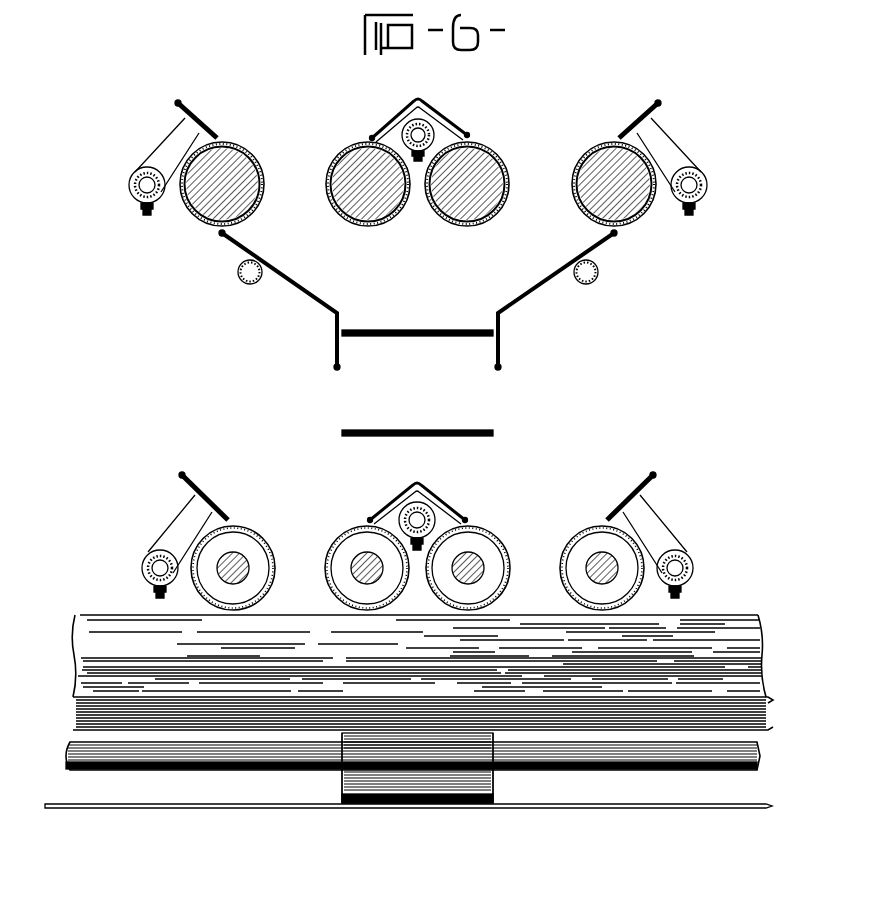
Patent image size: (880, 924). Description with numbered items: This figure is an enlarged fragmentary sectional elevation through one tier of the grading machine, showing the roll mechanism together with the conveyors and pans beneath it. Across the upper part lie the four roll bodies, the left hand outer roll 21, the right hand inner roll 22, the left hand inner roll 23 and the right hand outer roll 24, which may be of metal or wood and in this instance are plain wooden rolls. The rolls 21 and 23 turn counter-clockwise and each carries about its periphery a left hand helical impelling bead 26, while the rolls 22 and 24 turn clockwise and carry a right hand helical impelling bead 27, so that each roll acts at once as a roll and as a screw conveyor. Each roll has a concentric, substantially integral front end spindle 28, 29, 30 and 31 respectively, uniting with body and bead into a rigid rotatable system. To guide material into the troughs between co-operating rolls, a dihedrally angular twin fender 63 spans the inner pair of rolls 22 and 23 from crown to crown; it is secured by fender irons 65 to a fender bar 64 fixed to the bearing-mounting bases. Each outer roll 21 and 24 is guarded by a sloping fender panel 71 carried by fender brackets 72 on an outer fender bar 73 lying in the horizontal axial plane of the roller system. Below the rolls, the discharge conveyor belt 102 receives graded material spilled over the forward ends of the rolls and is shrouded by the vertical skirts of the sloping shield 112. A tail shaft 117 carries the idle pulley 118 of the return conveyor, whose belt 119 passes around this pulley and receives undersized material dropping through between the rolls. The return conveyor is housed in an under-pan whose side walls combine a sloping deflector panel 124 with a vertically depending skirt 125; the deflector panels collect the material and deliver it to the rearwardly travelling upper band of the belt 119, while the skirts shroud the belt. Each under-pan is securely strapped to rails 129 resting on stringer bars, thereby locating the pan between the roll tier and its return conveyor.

The left hand outer roll 21 is at (192, 214).
The right hand inner roll 22 is at (346, 220).
The left hand inner roll 23 is at (452, 222).
The right hand outer roll 24 is at (583, 210).
The left hand helical impelling bead 26 is at (250, 152).
The right hand helical impelling bead 27 is at (337, 156).
The front end spindle 28 is at (228, 584).
The front end spindle 29 is at (363, 584).
The front end spindle 30 is at (464, 584).
The front end spindle 31 is at (598, 584).
The twin fender 63 is at (398, 110).
The fender bar 64 is at (429, 123).
The fender iron 65 is at (452, 128).
The fender panel 71 is at (178, 102).
The fender bracket 72 is at (167, 140).
The outer fender bar 73 is at (130, 185).
The belt 102 is at (66, 702).
The sloping shield 112 is at (419, 656).
The tail shaft 117 is at (757, 756).
The idle pulley 118 is at (342, 780).
The belt 119 is at (408, 428).
The deflector panel 124 is at (300, 286).
The skirt 125 is at (334, 346).
The rail 129 is at (238, 274).